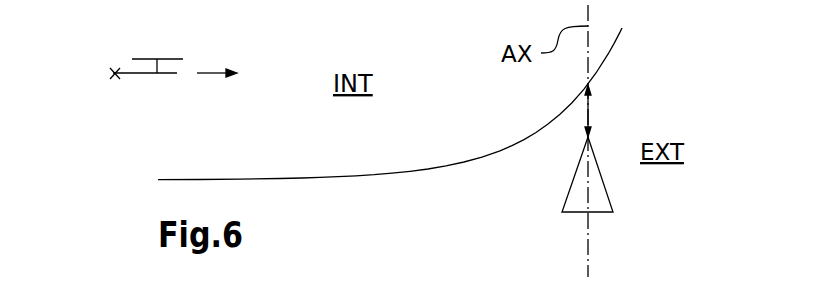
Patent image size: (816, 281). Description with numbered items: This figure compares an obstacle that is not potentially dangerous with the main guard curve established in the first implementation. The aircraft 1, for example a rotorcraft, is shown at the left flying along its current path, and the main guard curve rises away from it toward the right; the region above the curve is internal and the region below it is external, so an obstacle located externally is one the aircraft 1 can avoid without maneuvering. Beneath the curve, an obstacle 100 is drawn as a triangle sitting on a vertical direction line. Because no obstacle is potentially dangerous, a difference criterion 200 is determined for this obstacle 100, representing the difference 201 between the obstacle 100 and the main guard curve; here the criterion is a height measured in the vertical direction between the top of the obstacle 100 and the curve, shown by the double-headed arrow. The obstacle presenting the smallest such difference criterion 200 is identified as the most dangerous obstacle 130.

The aircraft 1 is at (136, 98).
The difference criterion 200 is at (649, 105).
The difference 201 is at (588, 110).
The obstacle 100 is at (637, 198).
The most dangerous obstacle 130 is at (600, 213).